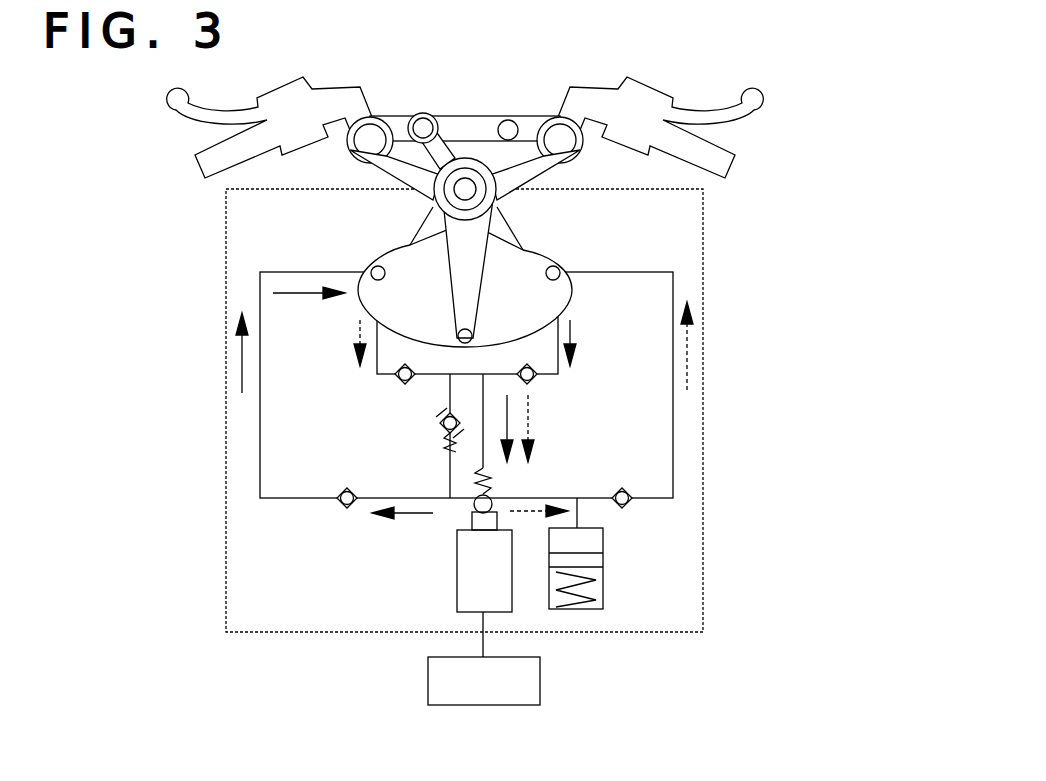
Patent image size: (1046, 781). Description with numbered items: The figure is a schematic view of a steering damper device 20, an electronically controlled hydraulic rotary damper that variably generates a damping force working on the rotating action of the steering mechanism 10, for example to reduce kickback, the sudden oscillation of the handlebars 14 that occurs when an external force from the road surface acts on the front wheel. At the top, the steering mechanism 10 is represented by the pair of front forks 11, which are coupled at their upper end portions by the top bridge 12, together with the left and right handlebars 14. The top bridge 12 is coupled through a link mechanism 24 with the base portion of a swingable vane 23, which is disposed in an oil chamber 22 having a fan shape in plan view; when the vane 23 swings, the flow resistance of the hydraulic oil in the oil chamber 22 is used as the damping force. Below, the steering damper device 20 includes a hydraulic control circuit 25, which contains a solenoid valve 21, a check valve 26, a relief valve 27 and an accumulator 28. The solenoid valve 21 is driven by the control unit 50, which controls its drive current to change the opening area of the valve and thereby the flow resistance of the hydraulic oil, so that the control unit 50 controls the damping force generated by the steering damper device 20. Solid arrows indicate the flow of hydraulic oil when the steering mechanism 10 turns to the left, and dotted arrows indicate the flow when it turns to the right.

The steering mechanism 10 is at (480, 80).
The front forks 11 is at (375, 116).
The top bridge 12 is at (390, 115).
The handlebars 14 is at (203, 168).
The steering damper device 20 is at (770, 250).
The solenoid valve 21 is at (457, 588).
The oil chamber 22 is at (546, 259).
The vane 23 is at (447, 228).
The link mechanism 24 is at (453, 141).
The hydraulic control circuit 25 is at (703, 336).
The check valve 26 is at (540, 380).
The relief valve 27 is at (440, 425).
The accumulator 28 is at (603, 585).
The control unit 50 is at (540, 683).